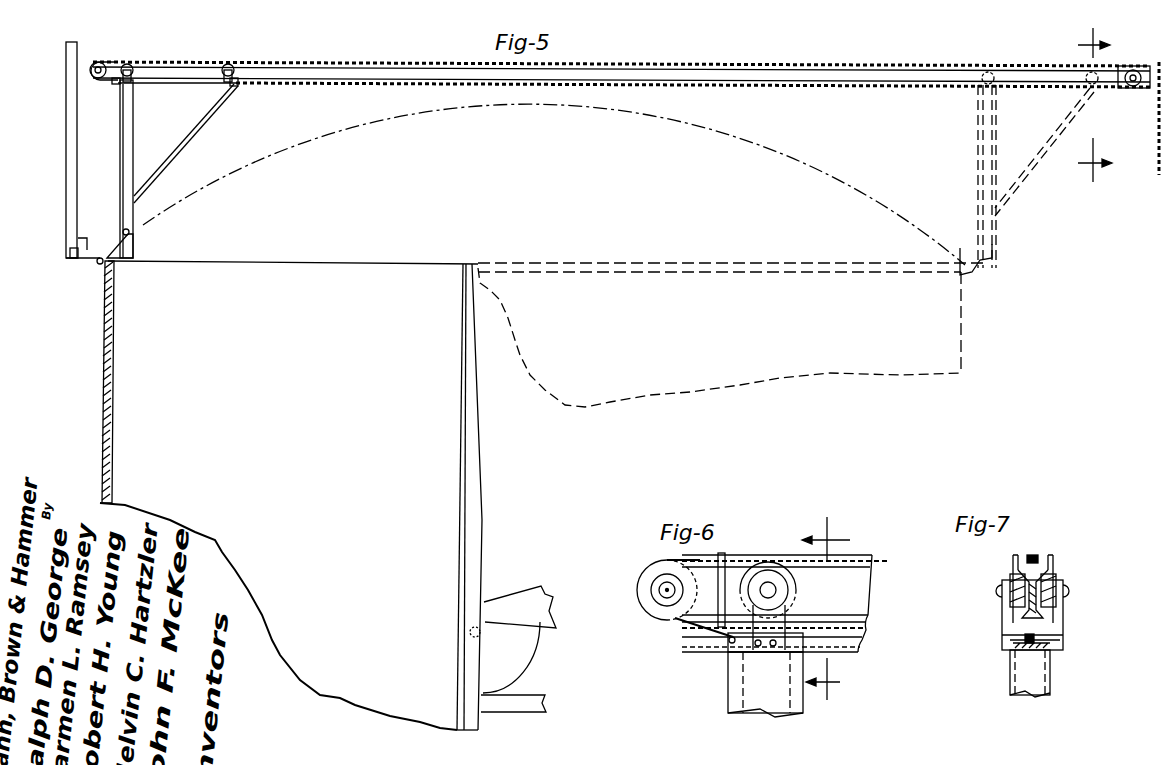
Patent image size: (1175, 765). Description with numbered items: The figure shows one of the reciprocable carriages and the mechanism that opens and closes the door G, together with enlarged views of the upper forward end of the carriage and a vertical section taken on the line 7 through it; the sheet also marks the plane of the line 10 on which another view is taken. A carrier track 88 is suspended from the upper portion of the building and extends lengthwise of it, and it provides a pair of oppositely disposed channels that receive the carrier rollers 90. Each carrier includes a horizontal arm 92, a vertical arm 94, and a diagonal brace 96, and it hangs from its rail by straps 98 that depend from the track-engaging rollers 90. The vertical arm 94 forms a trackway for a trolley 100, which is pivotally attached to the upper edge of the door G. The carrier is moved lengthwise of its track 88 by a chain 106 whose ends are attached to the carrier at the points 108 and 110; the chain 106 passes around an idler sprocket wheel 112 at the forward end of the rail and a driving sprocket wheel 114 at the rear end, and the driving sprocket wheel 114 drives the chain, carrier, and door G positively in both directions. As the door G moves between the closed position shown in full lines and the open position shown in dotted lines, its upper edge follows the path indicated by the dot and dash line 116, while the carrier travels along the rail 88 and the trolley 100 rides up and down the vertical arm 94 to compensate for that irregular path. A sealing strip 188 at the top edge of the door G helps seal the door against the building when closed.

In FIG. 5, the carrier track 88 is at (658, 65).
In FIG. 7, the carrier track 88 is at (1053, 556).
In FIG. 5, the carrier rollers 90 is at (129, 63).
In FIG. 7, the carrier rollers 90 is at (1013, 598).
In FIG. 5, the horizontal arm 92 is at (155, 82).
In FIG. 6, the horizontal arm 92 is at (843, 650).
In FIG. 5, the vertical arm 94 is at (120, 158).
In FIG. 6, the vertical arm 94 is at (728, 688).
In FIG. 5, the diagonal brace 96 is at (195, 128).
In FIG. 6, the straps 98 is at (782, 618).
In FIG. 7, the straps 98 is at (1063, 632).
In FIG. 5, the trolley 100 is at (132, 244).
In FIG. 5, the chain 106 is at (765, 88).
In FIG. 5, the chain attachment point 108 is at (116, 82).
In FIG. 6, the chain attachment point 108 is at (730, 637).
In FIG. 7, the chain attachment point 108 is at (1020, 652).
In FIG. 5, the chain attachment point 110 is at (240, 84).
In FIG. 5, the idler sprocket wheel 112 is at (112, 50).
In FIG. 5, the driving sprocket wheel 114 is at (1138, 70).
In FIG. 5, the dot and dash line 116 is at (555, 106).
In FIG. 5, the strip 188 is at (97, 263).
In FIG. 5, the line 10— 10 is at (1090, 107).
In FIG. 6, the line 7— 7 is at (826, 609).
In FIG. 5, the door G is at (122, 340).